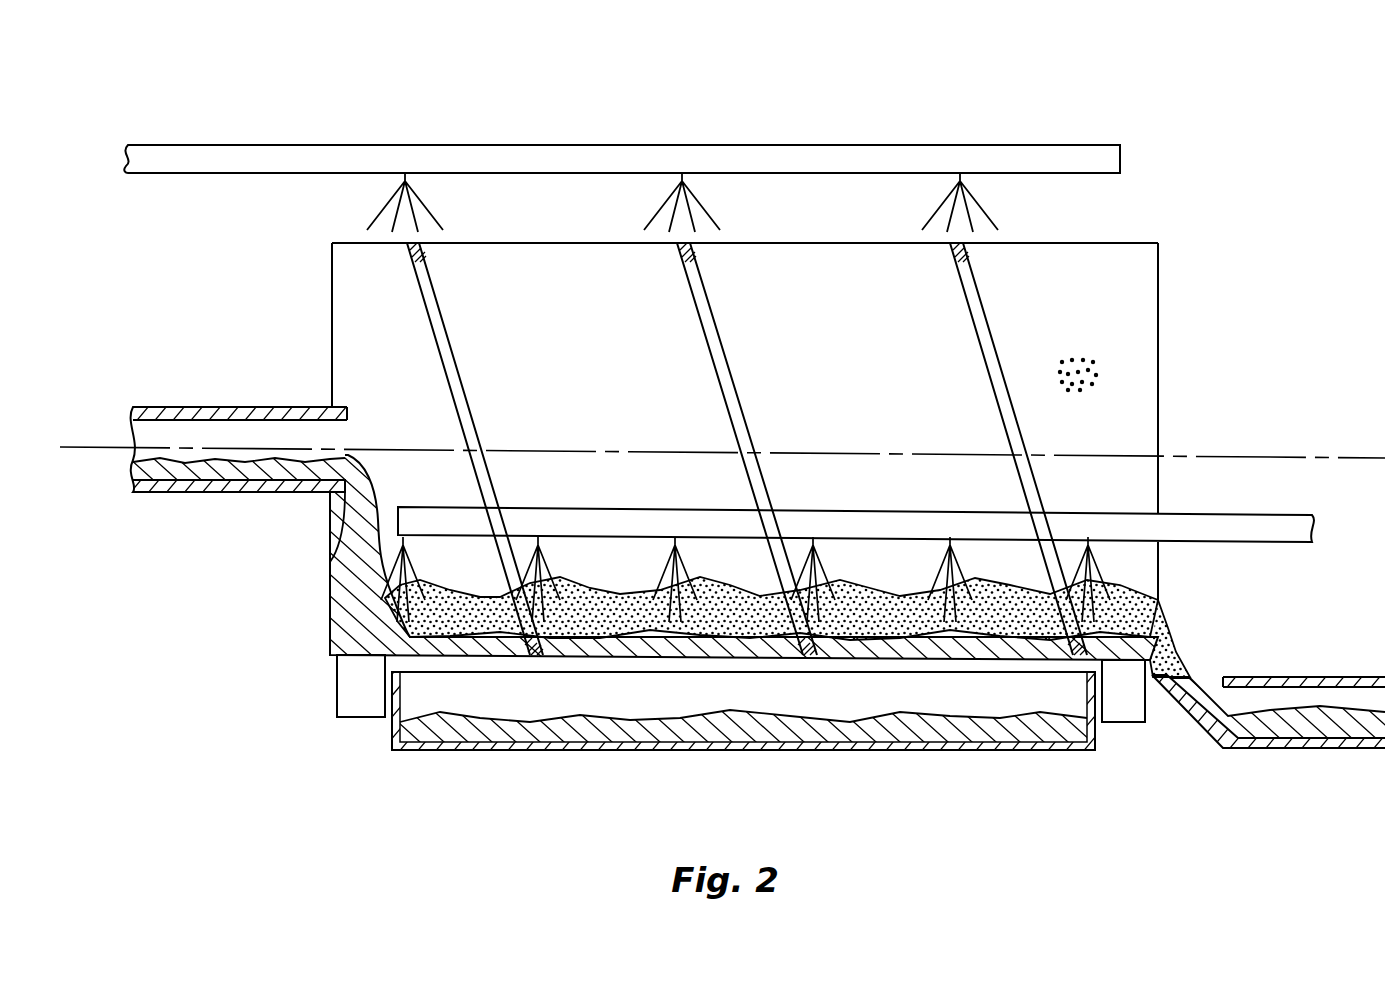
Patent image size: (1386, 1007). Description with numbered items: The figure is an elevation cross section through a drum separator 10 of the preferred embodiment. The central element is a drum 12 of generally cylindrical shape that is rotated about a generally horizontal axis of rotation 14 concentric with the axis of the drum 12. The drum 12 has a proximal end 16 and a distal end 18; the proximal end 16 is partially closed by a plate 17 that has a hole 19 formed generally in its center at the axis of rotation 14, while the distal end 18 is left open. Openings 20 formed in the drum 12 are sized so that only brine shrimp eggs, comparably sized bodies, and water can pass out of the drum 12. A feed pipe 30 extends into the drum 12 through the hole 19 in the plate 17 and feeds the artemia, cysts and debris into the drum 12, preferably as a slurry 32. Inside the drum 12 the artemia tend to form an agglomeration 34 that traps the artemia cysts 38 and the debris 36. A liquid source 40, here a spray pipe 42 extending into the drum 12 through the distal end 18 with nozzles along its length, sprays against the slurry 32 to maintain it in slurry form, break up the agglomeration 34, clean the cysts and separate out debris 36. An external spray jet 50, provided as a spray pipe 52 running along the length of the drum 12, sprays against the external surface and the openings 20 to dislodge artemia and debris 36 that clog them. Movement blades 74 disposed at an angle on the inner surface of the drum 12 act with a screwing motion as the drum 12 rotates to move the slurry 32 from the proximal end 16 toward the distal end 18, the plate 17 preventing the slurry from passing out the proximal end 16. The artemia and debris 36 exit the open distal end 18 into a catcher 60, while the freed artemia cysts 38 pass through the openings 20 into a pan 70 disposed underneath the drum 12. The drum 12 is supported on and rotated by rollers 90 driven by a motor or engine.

The drum separator 10 is at (172, 622).
The drum 12 is at (1123, 258).
The axis of rotation 14 is at (1278, 457).
The proximal end 16 is at (330, 255).
The plate 17 is at (330, 318).
The distal end 18 is at (1158, 270).
The hole 19 is at (330, 400).
The openings 20 is at (1085, 368).
The feed pipe 30 is at (160, 407).
The slurry 32 is at (133, 467).
The agglomeration 34 is at (718, 625).
The debris 36 is at (1158, 628).
The artemia cysts 38 is at (475, 730).
The liquid source 40 is at (1100, 558).
The spray pipe 42 is at (1272, 521).
The external spray jet 50 is at (977, 192).
The spray pipe 52 is at (873, 158).
The catcher 60 is at (1280, 677).
The pan 70 is at (998, 752).
The movement blades 74 is at (418, 281).
The rollers 90 is at (353, 703).